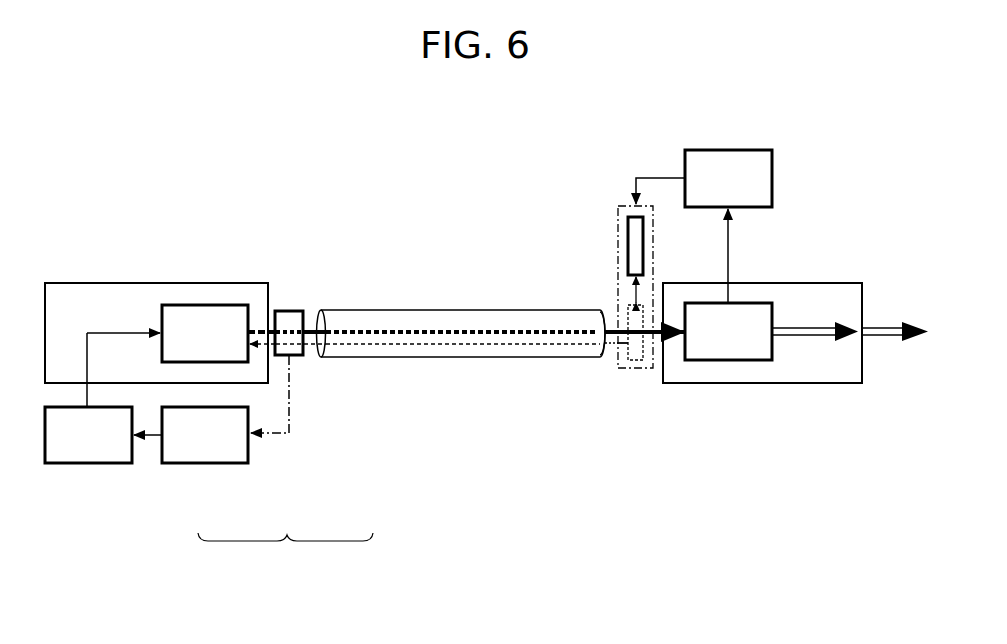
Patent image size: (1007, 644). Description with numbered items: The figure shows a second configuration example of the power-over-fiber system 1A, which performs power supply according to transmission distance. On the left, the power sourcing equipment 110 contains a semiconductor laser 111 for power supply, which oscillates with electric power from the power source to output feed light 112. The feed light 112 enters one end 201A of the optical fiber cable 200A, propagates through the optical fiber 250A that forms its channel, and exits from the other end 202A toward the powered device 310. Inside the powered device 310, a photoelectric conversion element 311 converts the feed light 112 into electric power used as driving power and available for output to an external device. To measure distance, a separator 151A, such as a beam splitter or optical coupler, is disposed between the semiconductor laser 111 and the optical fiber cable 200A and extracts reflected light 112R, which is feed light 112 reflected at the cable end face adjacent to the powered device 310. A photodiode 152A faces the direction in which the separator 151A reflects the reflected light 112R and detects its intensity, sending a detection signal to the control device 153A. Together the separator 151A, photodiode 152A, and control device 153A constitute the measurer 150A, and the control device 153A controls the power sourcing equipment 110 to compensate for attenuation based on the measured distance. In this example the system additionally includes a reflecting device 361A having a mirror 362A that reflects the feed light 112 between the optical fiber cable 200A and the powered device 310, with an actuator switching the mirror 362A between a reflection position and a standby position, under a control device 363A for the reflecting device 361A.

The power sourcing equipment 110 is at (108, 282).
The semiconductor laser for power supply 111 is at (158, 320).
The feed light 112 is at (415, 330).
The reflected light 112R is at (460, 347).
The measurer 150A is at (285, 557).
The separator 151A is at (292, 357).
The photodiode 152A is at (217, 464).
The control device 153A is at (105, 464).
The power-over-fiber system 1A is at (634, 146).
The optical fiber cable 200A is at (467, 309).
The one end 201A is at (312, 306).
The other end 202A is at (608, 358).
The optical fiber 250A is at (520, 310).
The powered device 310 is at (780, 282).
The photoelectric conversion element 311 is at (773, 318).
The reflecting device 361A is at (627, 205).
The mirror 362A is at (630, 247).
The control device for the reflecting device 363A is at (742, 150).